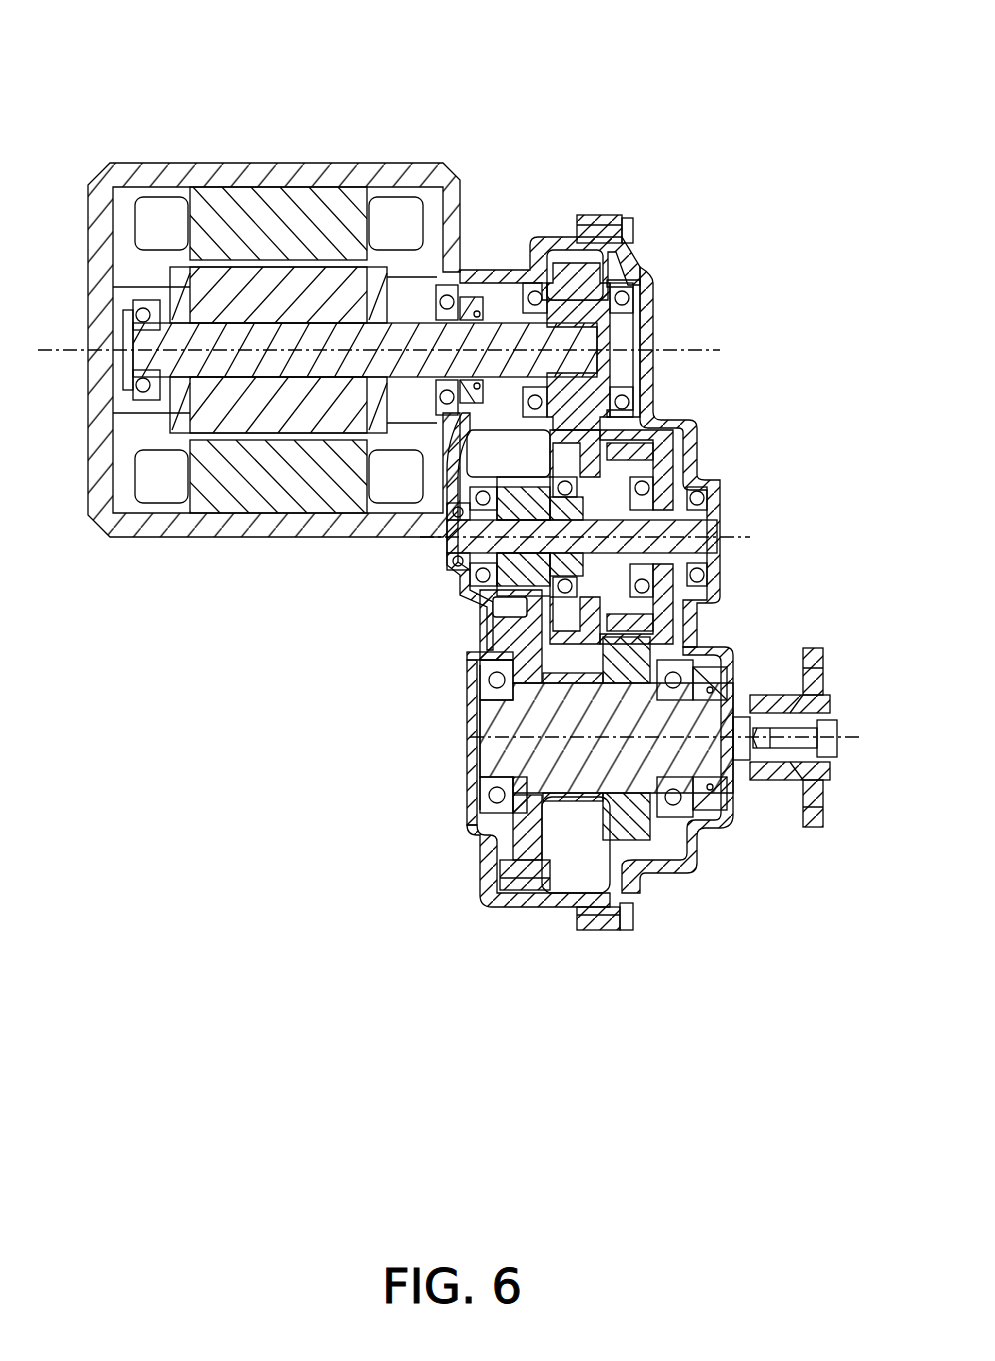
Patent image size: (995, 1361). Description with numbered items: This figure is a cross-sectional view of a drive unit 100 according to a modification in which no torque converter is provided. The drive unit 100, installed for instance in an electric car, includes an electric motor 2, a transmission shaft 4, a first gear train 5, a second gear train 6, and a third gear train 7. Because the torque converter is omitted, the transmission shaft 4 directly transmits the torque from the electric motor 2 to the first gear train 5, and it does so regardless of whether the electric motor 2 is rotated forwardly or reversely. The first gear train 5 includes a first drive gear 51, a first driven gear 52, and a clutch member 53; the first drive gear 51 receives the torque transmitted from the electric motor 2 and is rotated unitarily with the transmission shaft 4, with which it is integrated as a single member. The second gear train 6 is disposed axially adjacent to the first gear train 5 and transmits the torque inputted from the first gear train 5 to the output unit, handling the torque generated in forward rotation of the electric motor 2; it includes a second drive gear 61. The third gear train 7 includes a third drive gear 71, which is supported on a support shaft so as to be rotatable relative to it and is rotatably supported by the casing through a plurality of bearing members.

The drive unit 100 is at (748, 122).
The electric motor 2 is at (315, 147).
The transmission shaft 4 is at (503, 330).
The first gear train 5 is at (567, 237).
The first drive gear 51 is at (590, 383).
The first driven gear 52 is at (500, 470).
The clutch member 53 is at (660, 515).
The second drive gear 61 is at (670, 467).
The third drive gear 71 is at (483, 605).
The third gear train 7 is at (518, 905).
The second gear train 6 is at (633, 858).